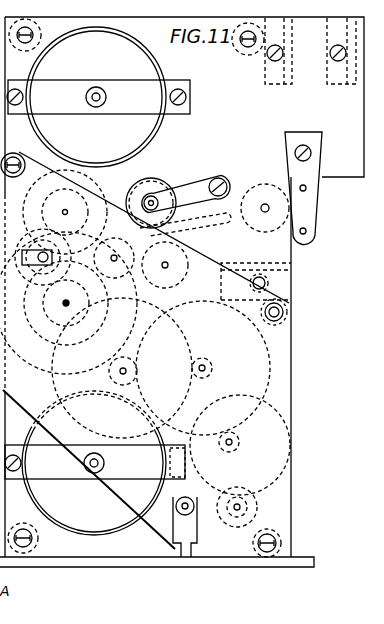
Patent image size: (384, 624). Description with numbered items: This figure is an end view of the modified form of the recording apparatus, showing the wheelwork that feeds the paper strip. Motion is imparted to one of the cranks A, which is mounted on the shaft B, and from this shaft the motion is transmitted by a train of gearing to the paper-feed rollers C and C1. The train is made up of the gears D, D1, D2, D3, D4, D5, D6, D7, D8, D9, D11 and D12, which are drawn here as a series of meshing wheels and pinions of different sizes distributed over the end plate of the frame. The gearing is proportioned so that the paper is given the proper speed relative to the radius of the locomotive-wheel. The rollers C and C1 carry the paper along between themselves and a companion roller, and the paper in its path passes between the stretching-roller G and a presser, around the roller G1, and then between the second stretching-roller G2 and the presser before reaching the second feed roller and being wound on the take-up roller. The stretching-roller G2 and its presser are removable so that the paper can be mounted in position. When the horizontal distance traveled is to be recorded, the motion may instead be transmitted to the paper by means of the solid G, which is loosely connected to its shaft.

The crank A is at (198, 539).
The shaft B is at (176, 503).
The roller C is at (66, 303).
The roller C1 is at (65, 212).
The gearing D is at (205, 518).
The gearing D1 is at (252, 509).
The gearing D2 is at (242, 503).
The gearing D3 is at (240, 445).
The gearing D4 is at (230, 450).
The gearing D5 is at (203, 368).
The gearing D6 is at (203, 362).
The gearing D7 is at (125, 390).
The gearing D8 is at (128, 370).
The gearing D9 is at (105, 368).
The gearing D11 is at (115, 240).
The gearing D12 is at (36, 192).
The stretching-roller G is at (180, 268).
The roller G1 is at (260, 192).
The stretching-roller G2 is at (152, 193).